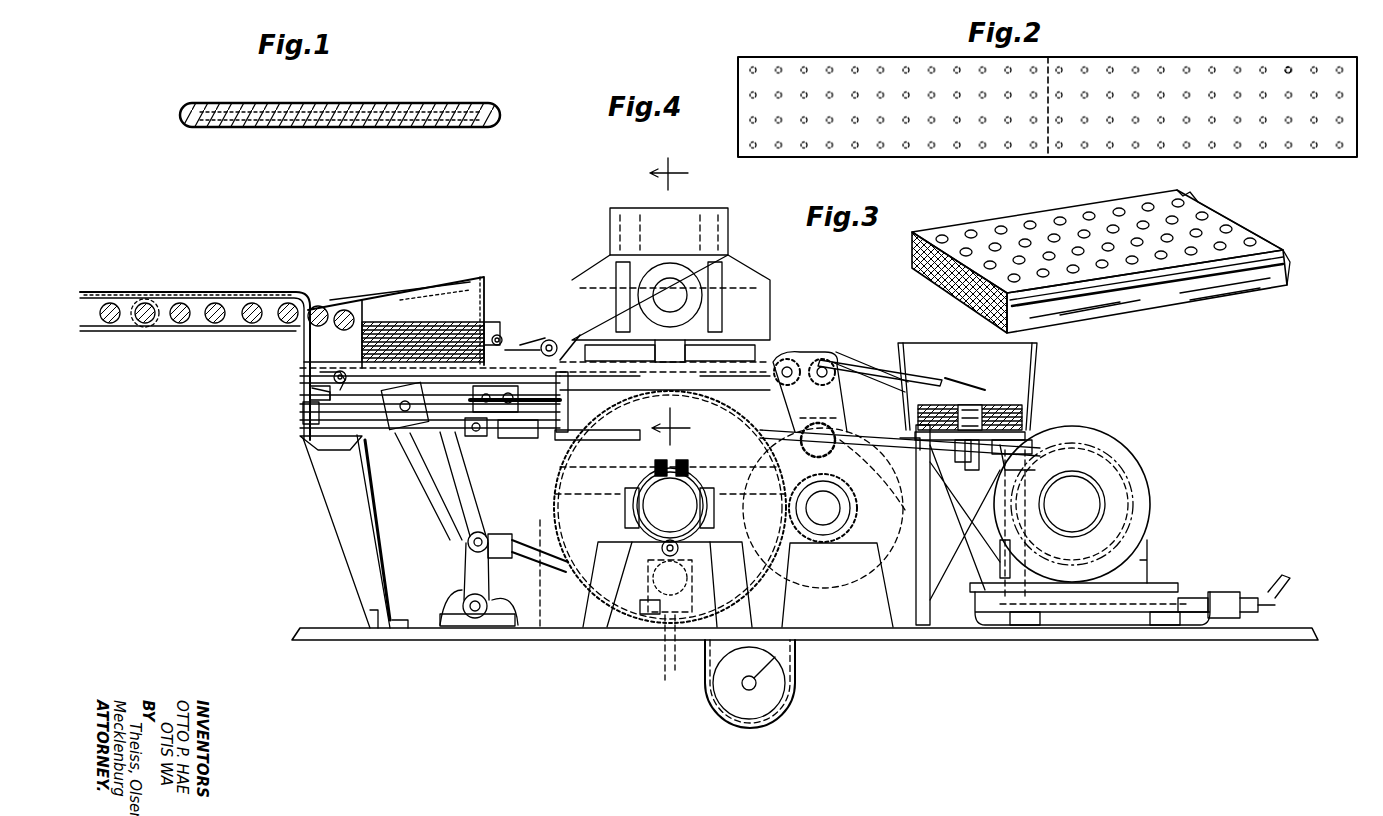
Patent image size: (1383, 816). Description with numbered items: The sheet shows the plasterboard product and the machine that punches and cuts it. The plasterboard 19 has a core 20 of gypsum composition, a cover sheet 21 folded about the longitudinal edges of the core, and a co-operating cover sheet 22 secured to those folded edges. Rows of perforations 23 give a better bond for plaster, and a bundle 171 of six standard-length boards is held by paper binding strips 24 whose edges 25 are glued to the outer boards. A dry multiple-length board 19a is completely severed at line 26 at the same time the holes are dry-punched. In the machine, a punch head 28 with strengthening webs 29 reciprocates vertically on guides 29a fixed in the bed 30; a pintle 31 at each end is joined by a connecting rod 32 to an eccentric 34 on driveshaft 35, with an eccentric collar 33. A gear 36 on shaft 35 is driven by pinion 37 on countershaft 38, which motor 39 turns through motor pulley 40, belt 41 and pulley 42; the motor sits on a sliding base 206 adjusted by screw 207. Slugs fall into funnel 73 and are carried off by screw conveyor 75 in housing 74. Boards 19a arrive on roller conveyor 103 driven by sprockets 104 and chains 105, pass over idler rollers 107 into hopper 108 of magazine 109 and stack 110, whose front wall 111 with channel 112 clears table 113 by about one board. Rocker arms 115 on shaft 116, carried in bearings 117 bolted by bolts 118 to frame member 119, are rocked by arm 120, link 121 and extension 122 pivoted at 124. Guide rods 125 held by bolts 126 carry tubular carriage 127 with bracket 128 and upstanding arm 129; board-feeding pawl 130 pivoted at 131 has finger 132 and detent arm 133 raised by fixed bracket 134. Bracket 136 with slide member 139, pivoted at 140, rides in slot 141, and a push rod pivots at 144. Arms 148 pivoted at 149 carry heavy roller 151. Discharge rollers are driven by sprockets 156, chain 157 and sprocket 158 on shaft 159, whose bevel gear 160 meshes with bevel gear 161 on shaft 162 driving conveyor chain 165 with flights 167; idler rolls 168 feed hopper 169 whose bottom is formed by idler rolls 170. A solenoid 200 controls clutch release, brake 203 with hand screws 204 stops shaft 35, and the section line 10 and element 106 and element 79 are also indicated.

In FIG. 4, the section line 10 is at (676, 301).
In FIG. 1, the plasterboard 19 is at (272, 104).
In FIG. 3, the plasterboard 19 is at (912, 252).
In FIG. 4, the plasterboard 19 is at (946, 378).
In FIG. 2, the multiple-length dry board 19a is at (1214, 57).
In FIG. 4, the multiple-length dry board 19a is at (240, 290).
In FIG. 1, the core 20 is at (456, 104).
In FIG. 1, the cover sheet 21 is at (361, 128).
In FIG. 1, the co-operating cover sheet 22 is at (392, 104).
In FIG. 2, the perforations 23 is at (1289, 66).
In FIG. 3, the perforations 23 is at (1223, 222).
In FIG. 3, the paper binding strips 24 is at (1178, 288).
In FIG. 3, the edges of the strips 25 is at (1268, 246).
In FIG. 2, the severing line 26 is at (1052, 82).
In FIG. 4, the punch head 28 is at (760, 340).
In FIG. 4, the strengthening webs 29 is at (722, 245).
In FIG. 4, the liner pins or guides 29a is at (776, 356).
In FIG. 4, the frame or bed 30 is at (788, 398).
In FIG. 4, the pintle 31 is at (672, 292).
In FIG. 4, the connecting rod 32 is at (760, 330).
In FIG. 4, the eccentric collar 33 is at (552, 494).
In FIG. 4, the eccentric 34 is at (556, 467).
In FIG. 4, the driveshaft 35 is at (660, 565).
In FIG. 4, the gear 36 is at (556, 557).
In FIG. 4, the pinion 37 is at (862, 492).
In FIG. 4, the countershaft 38 is at (823, 530).
In FIG. 4, the motor 39 is at (1140, 518).
In FIG. 4, the motor pulley 40 is at (1135, 490).
In FIG. 4, the belt 41 is at (1005, 452).
In FIG. 4, the pulley 42 is at (890, 515).
In FIG. 4, the funnel 73 is at (705, 583).
In FIG. 4, the screw conveyor housing 74 is at (773, 708).
In FIG. 4, the screw conveyor 75 is at (735, 702).
In FIG. 4, the arm 79 is at (967, 366).
In FIG. 4, the roller conveyor 103 is at (148, 325).
In FIG. 4, the sprockets 104 is at (126, 323).
In FIG. 4, the chains 105 is at (222, 332).
In FIG. 4, the roller 106 is at (313, 305).
In FIG. 4, the idler rollers 107 is at (330, 312).
In FIG. 4, the hopper 108 is at (486, 300).
In FIG. 4, the magazine 109 is at (436, 284).
In FIG. 4, the pile or stack 110 is at (492, 330).
In FIG. 4, the front wall 111 is at (490, 300).
In FIG. 4, the channel 112 is at (499, 336).
In FIG. 4, the table 113 is at (312, 373).
In FIG. 4, the rocker arms 115 is at (470, 505).
In FIG. 4, the transverse shaft 116 is at (475, 618).
In FIG. 4, the bearings 117 is at (495, 625).
In FIG. 4, the bolts 118 is at (525, 622).
In FIG. 4, the structural frame member 119 is at (376, 636).
In FIG. 4, the arm 120 is at (436, 622).
In FIG. 4, the link 121 is at (560, 600).
In FIG. 4, the extension 122 is at (671, 659).
In FIG. 4, the pivot 124 is at (680, 628).
In FIG. 4, the horizontal guide rods 125 is at (322, 428).
In FIG. 4, the bolts 126 is at (302, 412).
In FIG. 4, the tubular carriage 127 is at (440, 432).
In FIG. 4, the bracket 128 is at (396, 430).
In FIG. 4, the upstanding arm 129 is at (362, 428).
In FIG. 4, the board-feeding pawl 130 is at (400, 360).
In FIG. 4, the pivot 131 is at (372, 330).
In FIG. 4, the finger 132 is at (420, 320).
In FIG. 4, the detent arm 133 is at (305, 360).
In FIG. 4, the fixed bracket 134 is at (313, 386).
In FIG. 4, the bracket 136 is at (478, 436).
In FIG. 4, the slide member 139 is at (551, 338).
In FIG. 4, the pivot 140 is at (510, 432).
In FIG. 4, the slot 141 is at (547, 334).
In FIG. 4, the pivot 144 is at (518, 396).
In FIG. 4, the arms 148 is at (580, 340).
In FIG. 4, the pivot 149 is at (533, 333).
In FIG. 4, the heavy roller 151 is at (597, 406).
In FIG. 4, the sprockets 156 is at (824, 358).
In FIG. 4, the chain 157 is at (870, 358).
In FIG. 4, the sprocket 158 is at (830, 420).
In FIG. 4, the transverse shaft 159 is at (836, 442).
In FIG. 4, the bevel gear 160 is at (802, 416).
In FIG. 4, the bevel gear 161 is at (868, 430).
In FIG. 4, the shaft 162 is at (899, 430).
In FIG. 4, the conveyor chain 165 is at (963, 462).
In FIG. 4, the flights 167 is at (976, 406).
In FIG. 4, the idler rolls 168 is at (905, 372).
In FIG. 4, the hopper 169 is at (1032, 400).
In FIG. 4, the idler conveyor rolls 170 is at (1040, 432).
In FIG. 4, the bundle 171 is at (1036, 366).
In FIG. 4, the solenoid 200 is at (750, 618).
In FIG. 4, the brake 203 is at (626, 600).
In FIG. 4, the hand screws 204 is at (692, 466).
In FIG. 4, the sliding base 206 is at (1134, 592).
In FIG. 4, the screw 207 is at (1198, 612).